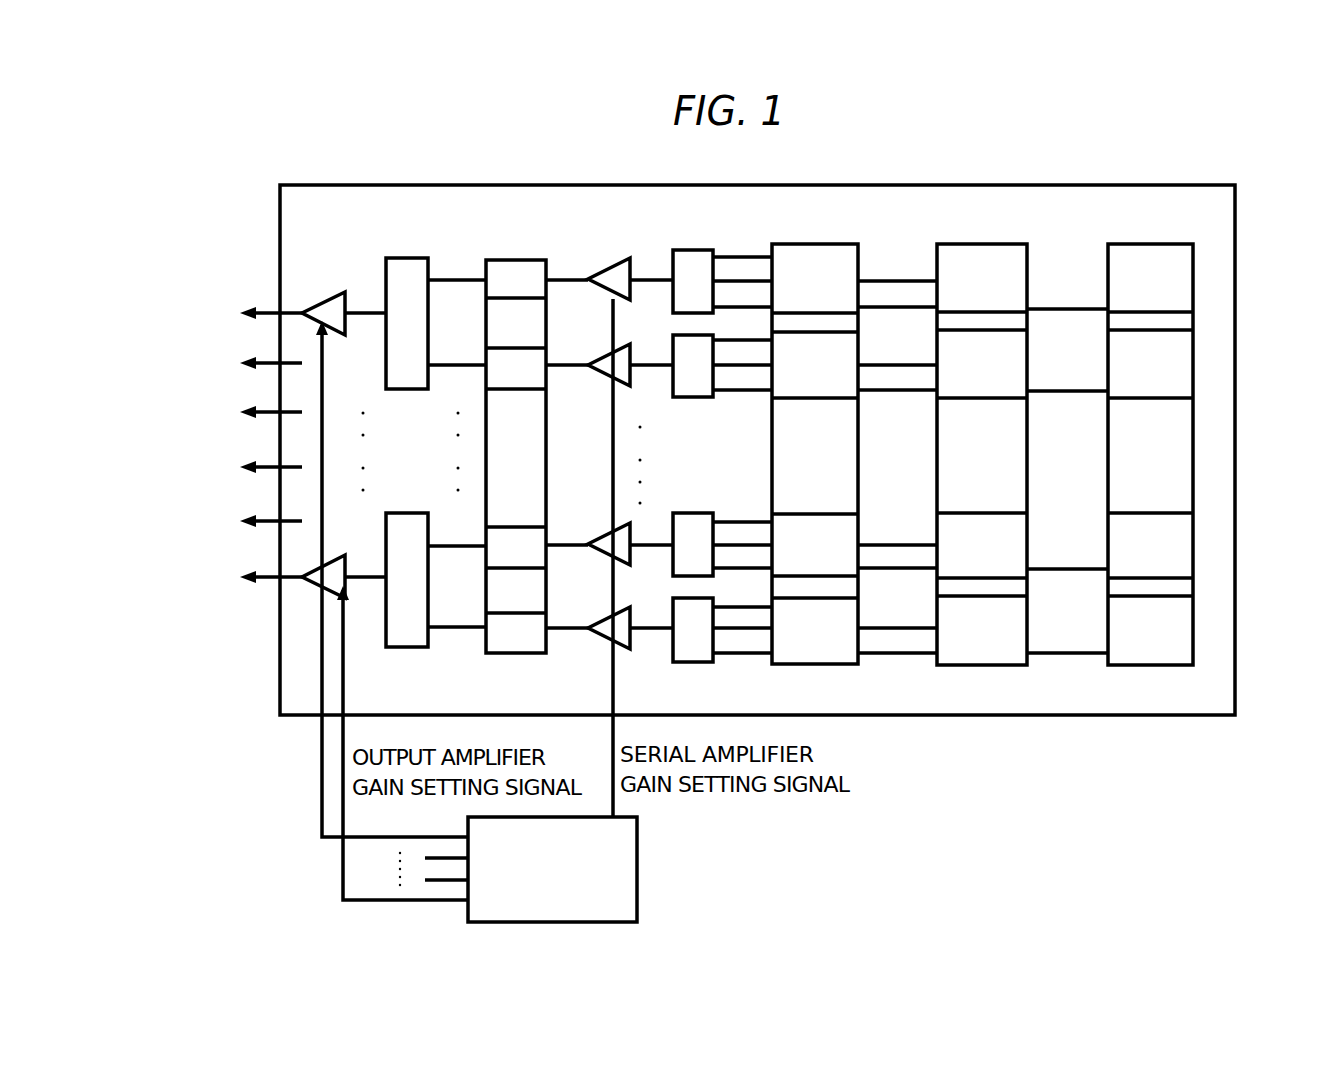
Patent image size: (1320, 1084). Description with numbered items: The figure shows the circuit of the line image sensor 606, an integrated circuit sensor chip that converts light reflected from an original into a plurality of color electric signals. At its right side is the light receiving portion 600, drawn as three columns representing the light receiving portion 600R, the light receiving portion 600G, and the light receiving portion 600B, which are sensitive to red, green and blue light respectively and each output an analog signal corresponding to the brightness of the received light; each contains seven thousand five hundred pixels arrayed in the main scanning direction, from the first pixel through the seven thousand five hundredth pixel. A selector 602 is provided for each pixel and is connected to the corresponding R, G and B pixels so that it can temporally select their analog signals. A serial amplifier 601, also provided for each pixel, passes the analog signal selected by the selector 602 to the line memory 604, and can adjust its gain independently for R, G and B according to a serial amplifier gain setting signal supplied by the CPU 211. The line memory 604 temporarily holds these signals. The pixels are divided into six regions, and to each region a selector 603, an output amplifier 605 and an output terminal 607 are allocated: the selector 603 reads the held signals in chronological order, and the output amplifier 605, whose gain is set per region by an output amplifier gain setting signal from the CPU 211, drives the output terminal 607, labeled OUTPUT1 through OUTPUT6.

The light receiving portion 600 is at (1013, 377).
The light receiving portion R 600R is at (833, 244).
The light receiving portion G 600G is at (1002, 244).
The light receiving portion B 600B is at (1149, 244).
The serial amplifier 601 is at (608, 268).
The selector 602 is at (695, 250).
The selector 603 is at (406, 258).
The line memory 604 is at (514, 260).
The output amplifier 605 is at (330, 293).
The line image sensor 606 is at (355, 185).
The output terminal 607 is at (169, 270).
The CPU 211 is at (637, 860).